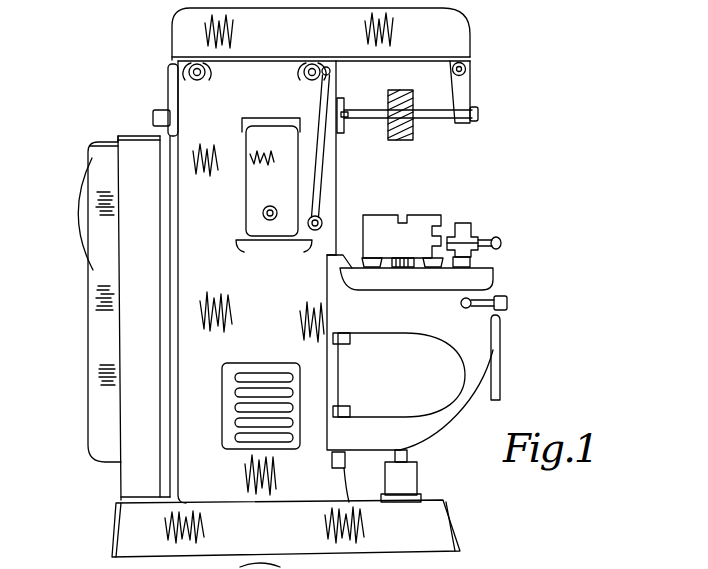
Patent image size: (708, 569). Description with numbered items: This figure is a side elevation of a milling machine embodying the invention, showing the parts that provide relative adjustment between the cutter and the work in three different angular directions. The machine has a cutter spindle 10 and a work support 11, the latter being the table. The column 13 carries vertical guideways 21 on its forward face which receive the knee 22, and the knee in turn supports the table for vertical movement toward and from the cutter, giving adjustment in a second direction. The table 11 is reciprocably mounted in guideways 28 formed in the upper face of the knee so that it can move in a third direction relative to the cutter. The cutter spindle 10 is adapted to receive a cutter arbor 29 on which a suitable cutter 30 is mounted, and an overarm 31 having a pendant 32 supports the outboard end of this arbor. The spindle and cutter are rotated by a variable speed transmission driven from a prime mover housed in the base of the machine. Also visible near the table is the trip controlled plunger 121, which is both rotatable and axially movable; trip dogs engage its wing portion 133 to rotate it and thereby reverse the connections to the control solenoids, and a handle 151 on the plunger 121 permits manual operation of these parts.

The cutter spindle 10 is at (344, 108).
The work support 11 is at (432, 219).
The column 13 is at (186, 88).
The vertical guideways 21 is at (340, 194).
The knee 22 is at (478, 354).
The guideways 28 is at (380, 263).
The cutter arbor 29 is at (430, 116).
The cutter 30 is at (397, 141).
The overarm 31 is at (458, 41).
The pendant 32 is at (463, 89).
The trip controlled plunger 121 is at (468, 226).
The wing portion 133 is at (472, 239).
The handle 151 is at (494, 242).